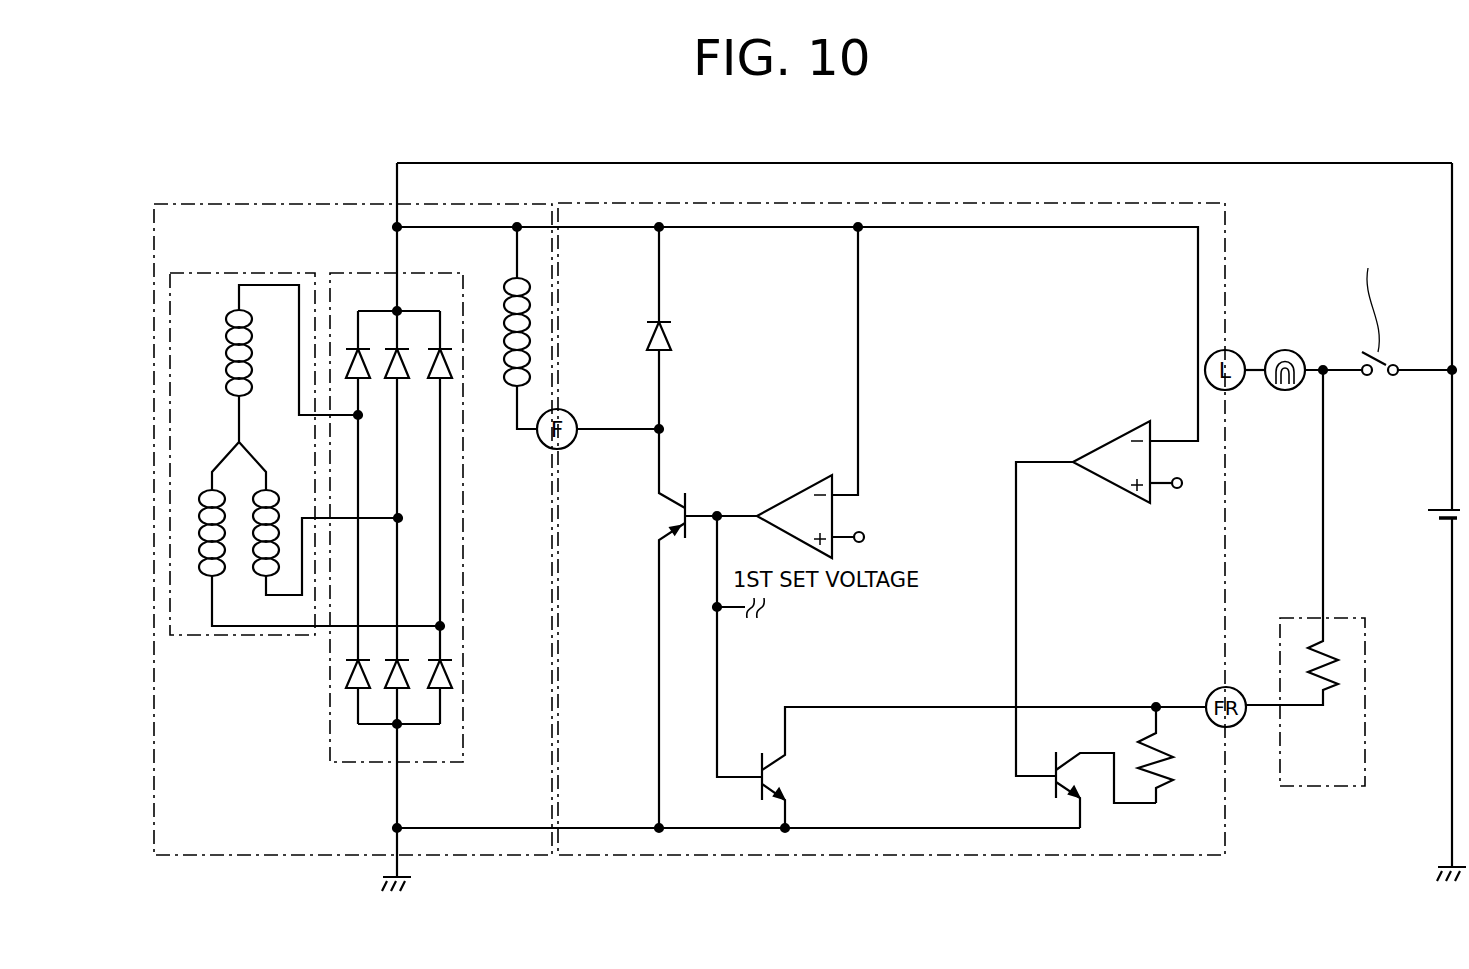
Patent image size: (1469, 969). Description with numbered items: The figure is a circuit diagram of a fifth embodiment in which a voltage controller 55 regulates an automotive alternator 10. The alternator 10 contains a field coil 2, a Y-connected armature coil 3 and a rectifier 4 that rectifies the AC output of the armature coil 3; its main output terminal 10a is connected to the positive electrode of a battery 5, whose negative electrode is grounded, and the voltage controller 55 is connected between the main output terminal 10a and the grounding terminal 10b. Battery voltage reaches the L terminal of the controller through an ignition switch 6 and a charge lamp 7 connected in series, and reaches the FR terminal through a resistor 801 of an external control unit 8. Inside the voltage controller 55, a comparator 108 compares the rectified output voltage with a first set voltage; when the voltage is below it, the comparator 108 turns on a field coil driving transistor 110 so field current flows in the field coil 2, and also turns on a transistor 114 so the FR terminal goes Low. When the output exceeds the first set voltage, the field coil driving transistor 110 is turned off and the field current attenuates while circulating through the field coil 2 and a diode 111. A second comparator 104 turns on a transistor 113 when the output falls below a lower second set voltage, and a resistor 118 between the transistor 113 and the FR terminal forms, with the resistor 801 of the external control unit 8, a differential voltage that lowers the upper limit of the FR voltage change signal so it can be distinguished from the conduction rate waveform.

The automotive alternator 10 is at (244, 203).
The main output terminal 10a is at (397, 225).
The grounding terminal 10b is at (396, 828).
The armature coil 3 is at (214, 272).
The rectifier 4 is at (349, 272).
The field coil 2 is at (508, 270).
The voltage controller 55 is at (770, 203).
The diode 111 is at (673, 342).
The comparator 108 is at (787, 490).
The field coil driving transistor 110 is at (674, 511).
The transistor 114 is at (762, 786).
The transistor 113 is at (1054, 785).
The comparator 104 is at (1112, 442).
The resistor 118 is at (1172, 765).
The charge lamp 7 is at (1285, 391).
The ignition switch 6 is at (1374, 377).
The battery 5 is at (1443, 508).
The resistor 801 is at (1328, 640).
The external control unit 8 is at (1316, 790).